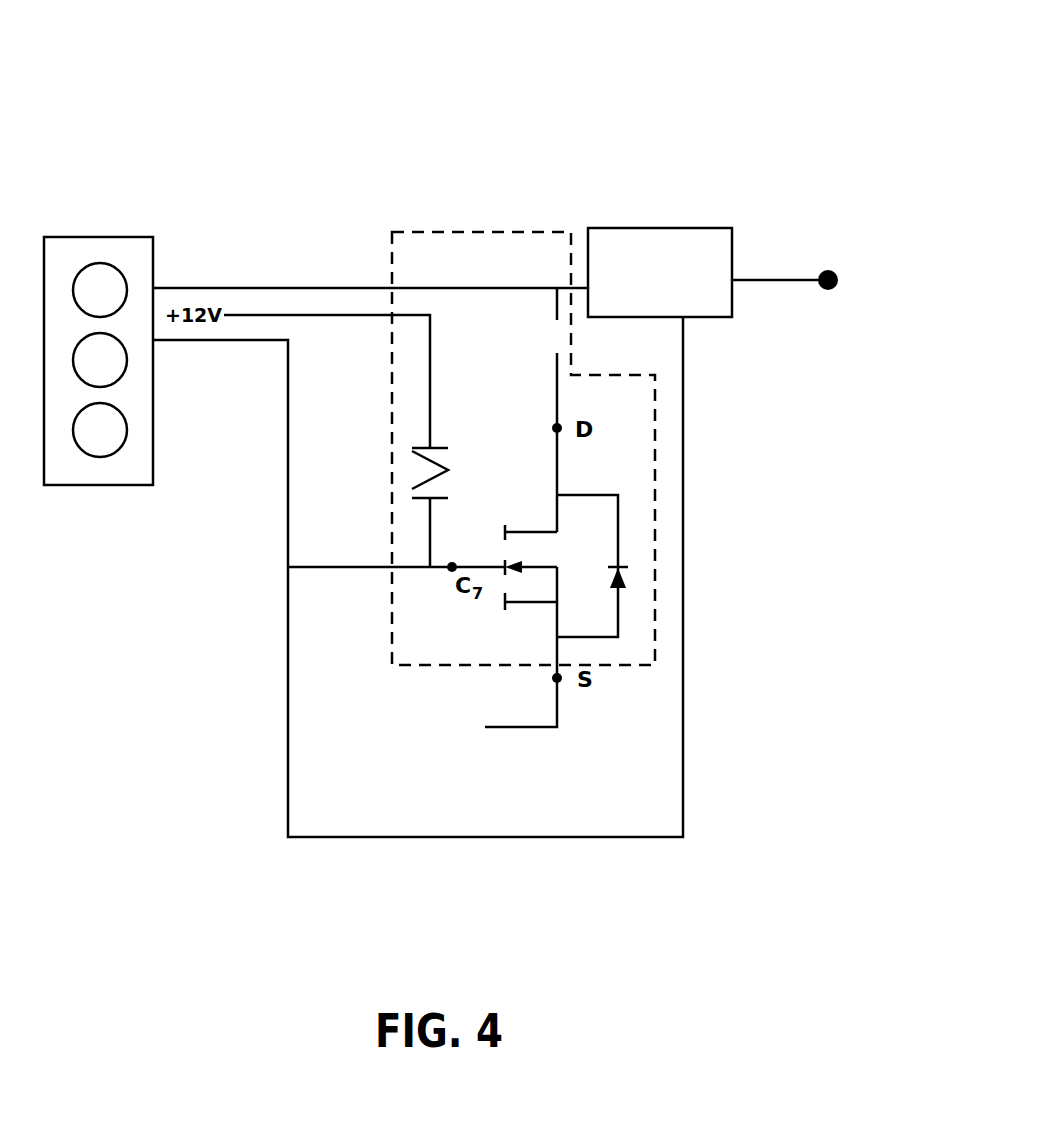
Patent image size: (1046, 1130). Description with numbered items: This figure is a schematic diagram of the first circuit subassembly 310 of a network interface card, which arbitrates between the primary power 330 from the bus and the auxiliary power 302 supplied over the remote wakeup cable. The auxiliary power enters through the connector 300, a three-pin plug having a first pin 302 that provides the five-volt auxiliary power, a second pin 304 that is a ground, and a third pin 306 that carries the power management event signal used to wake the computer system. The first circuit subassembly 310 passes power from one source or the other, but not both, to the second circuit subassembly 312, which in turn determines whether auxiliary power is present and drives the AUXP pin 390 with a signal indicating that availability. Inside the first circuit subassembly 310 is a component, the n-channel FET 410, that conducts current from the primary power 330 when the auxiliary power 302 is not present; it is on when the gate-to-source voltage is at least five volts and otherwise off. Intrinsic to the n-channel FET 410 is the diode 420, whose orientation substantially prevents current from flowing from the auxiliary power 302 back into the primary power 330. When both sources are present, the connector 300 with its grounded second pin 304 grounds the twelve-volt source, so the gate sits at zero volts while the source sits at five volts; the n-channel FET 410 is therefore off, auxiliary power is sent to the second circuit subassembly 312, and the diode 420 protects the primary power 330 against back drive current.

The connector 300 is at (123, 214).
The first pin 302 is at (120, 301).
The second pin 304 is at (120, 371).
The third pin 306 is at (120, 441).
The first circuit subassembly 310 is at (487, 216).
The second circuit subassembly 312 is at (643, 216).
The +5V primary power 330 is at (440, 767).
The AUXP pin 390 is at (837, 254).
The n-channel field effect transistor 410 is at (478, 628).
The diode 420 is at (646, 572).